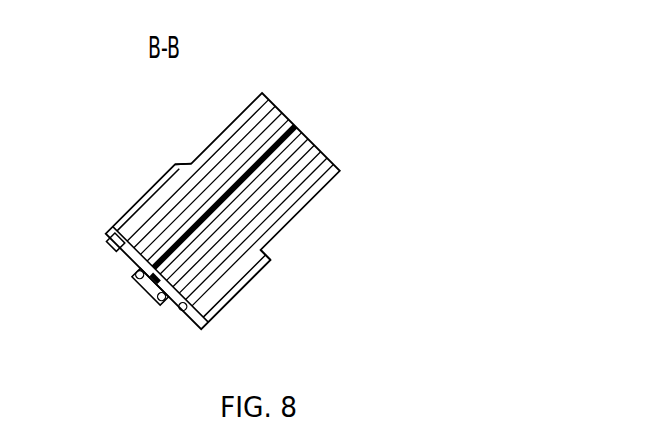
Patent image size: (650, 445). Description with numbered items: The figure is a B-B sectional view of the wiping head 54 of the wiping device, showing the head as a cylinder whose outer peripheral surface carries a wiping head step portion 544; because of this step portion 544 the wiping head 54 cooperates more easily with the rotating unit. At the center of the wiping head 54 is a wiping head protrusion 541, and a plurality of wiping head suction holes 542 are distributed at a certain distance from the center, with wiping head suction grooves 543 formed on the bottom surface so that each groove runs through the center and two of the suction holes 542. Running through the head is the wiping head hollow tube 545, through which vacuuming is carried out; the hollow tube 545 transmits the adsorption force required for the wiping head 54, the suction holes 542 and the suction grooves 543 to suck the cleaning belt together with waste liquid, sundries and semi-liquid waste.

The wiping head 54 is at (381, 118).
The wiping head protrusion 541 is at (150, 300).
The wiping head suction hole 542 is at (212, 313).
The wiping head suction groove 543 is at (110, 232).
The wiping head step portion 544 is at (186, 160).
The wiping head hollow tube 545 is at (293, 148).